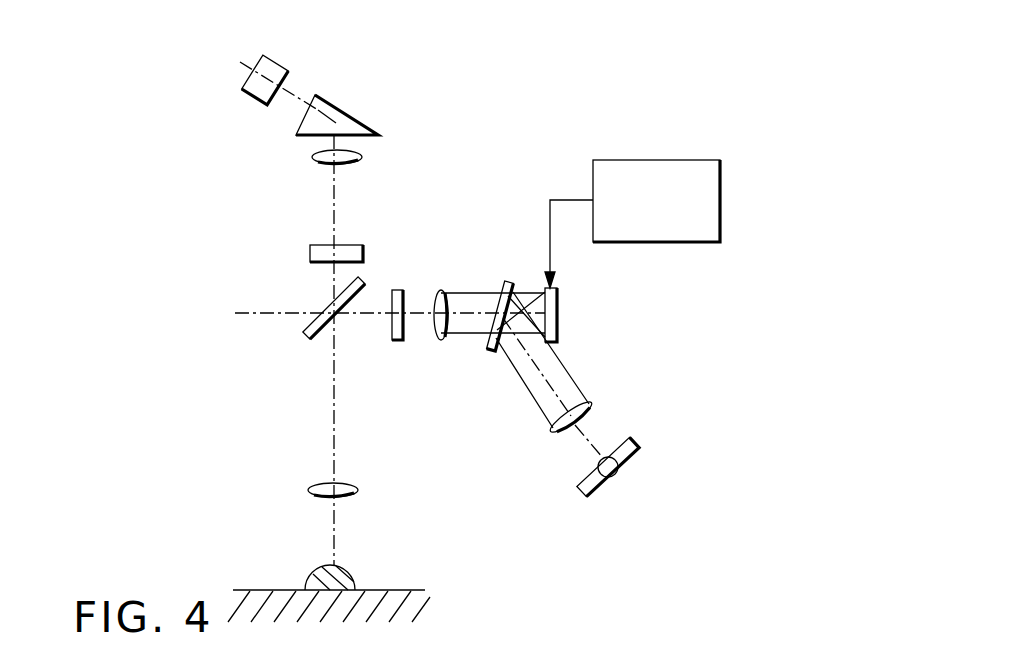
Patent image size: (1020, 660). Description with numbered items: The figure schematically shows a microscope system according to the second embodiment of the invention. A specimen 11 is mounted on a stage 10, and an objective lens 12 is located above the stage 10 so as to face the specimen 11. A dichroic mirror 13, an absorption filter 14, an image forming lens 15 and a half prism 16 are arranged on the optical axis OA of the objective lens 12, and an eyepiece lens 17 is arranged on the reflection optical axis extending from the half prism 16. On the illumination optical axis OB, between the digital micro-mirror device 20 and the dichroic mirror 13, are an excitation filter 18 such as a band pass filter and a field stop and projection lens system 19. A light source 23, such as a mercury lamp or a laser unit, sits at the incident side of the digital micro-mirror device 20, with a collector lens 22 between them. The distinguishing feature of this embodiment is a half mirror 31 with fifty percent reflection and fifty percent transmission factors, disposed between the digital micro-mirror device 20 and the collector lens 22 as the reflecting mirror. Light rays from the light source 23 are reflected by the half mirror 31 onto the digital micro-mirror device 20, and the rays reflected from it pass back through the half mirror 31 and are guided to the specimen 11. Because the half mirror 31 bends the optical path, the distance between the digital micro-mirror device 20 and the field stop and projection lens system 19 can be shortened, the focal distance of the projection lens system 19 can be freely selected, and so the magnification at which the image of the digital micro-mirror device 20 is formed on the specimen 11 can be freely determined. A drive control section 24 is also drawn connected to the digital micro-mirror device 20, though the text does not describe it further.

The stage 10 is at (409, 590).
The specimen 11 is at (314, 576).
The objective lens 12 is at (308, 490).
The dichroic mirror 13 is at (306, 336).
The absorption filter 14 is at (310, 253).
The image forming lens 15 is at (312, 157).
The half prism 16 is at (336, 108).
The eyepiece lens 17 is at (278, 60).
The excitation filter 18 is at (397, 288).
The field stop and projection lens system 19 is at (441, 290).
The digital micro-mirror device 20 is at (557, 318).
The collector lens 22 is at (592, 406).
The light source 23 is at (640, 447).
The drive control section 24 is at (720, 206).
The half mirror 31 is at (504, 282).
The optical axis OA is at (336, 437).
The illumination optical axis OB is at (364, 318).